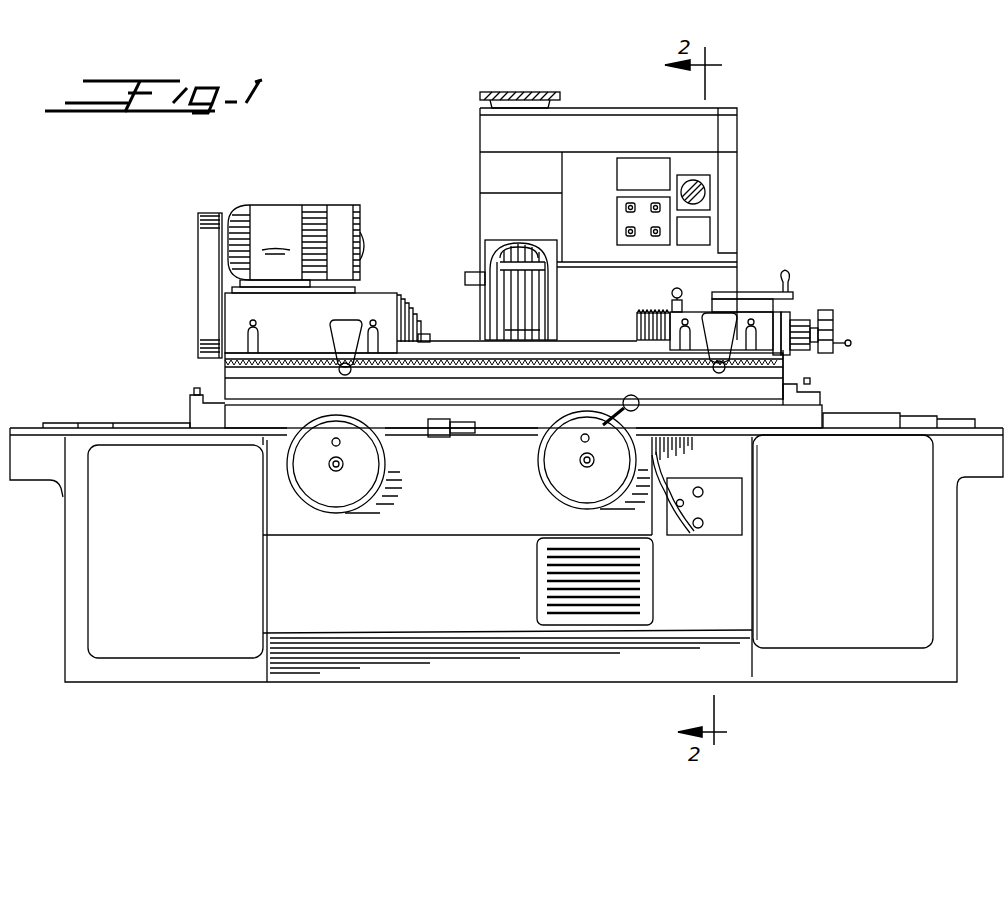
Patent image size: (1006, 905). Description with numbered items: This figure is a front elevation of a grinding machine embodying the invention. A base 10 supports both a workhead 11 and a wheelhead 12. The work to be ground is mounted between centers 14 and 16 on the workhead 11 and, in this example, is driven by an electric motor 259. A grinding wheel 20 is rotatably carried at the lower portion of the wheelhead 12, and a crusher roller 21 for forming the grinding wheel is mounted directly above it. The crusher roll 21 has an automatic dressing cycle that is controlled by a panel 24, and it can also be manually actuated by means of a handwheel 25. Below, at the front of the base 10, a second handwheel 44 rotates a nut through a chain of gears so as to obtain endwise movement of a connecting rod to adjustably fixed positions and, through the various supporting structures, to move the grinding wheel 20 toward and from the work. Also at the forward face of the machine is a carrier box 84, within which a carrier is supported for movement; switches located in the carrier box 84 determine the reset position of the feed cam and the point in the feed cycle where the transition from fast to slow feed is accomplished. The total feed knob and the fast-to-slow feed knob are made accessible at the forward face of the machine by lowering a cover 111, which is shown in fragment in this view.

The base 10 is at (915, 583).
The workhead 11 is at (413, 270).
The wheelhead 12 is at (465, 226).
The center 14 is at (428, 338).
The center 16 is at (624, 334).
The grinding wheel 20 is at (535, 292).
The crusher roller 21 is at (523, 246).
The panel 24 is at (704, 170).
The handwheel 25 is at (543, 93).
The handwheel 44 is at (560, 470).
The carrier box 84 is at (730, 517).
The cover 111 is at (675, 525).
The electric motor 259 is at (296, 246).